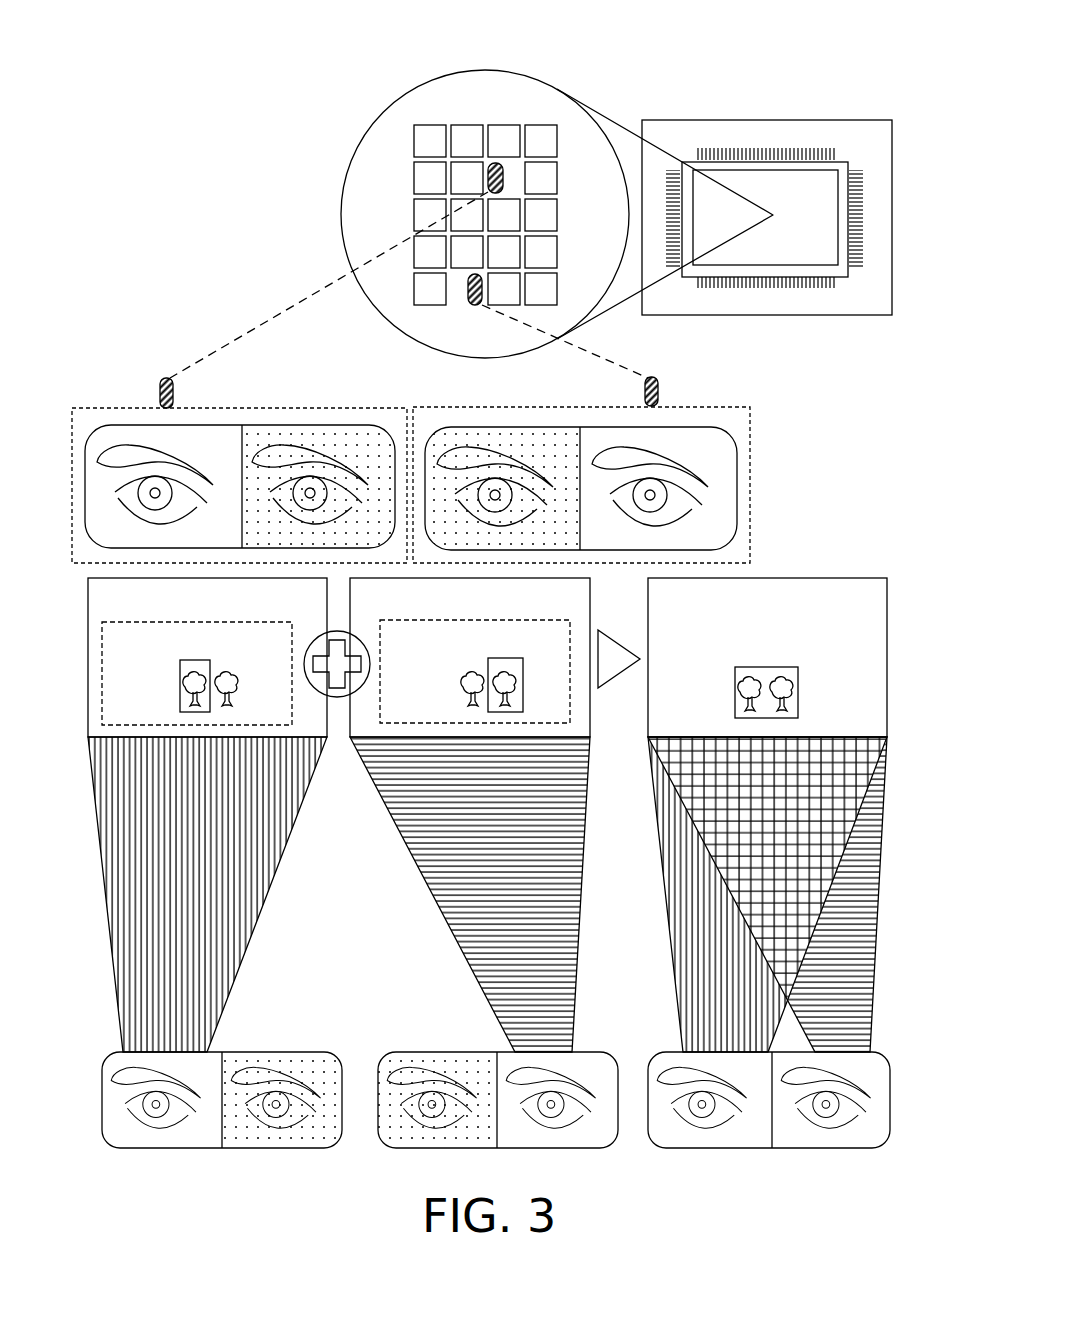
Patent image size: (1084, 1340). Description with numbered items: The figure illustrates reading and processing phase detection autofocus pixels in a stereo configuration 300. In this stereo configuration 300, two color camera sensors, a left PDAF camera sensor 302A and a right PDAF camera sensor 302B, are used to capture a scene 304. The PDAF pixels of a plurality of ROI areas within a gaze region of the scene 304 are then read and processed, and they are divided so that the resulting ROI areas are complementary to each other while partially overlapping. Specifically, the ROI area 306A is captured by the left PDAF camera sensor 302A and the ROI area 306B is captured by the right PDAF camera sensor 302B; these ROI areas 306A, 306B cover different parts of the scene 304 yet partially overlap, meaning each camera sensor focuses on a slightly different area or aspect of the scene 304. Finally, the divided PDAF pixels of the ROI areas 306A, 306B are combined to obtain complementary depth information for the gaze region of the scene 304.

The stereo configuration 300 is at (747, 50).
The left PDAF camera sensor 302A is at (127, 407).
The right PDAF camera sensor 302B is at (703, 405).
The scene 304 is at (487, 657).
The ROI area 306A is at (197, 673).
The ROI area 306B is at (475, 671).